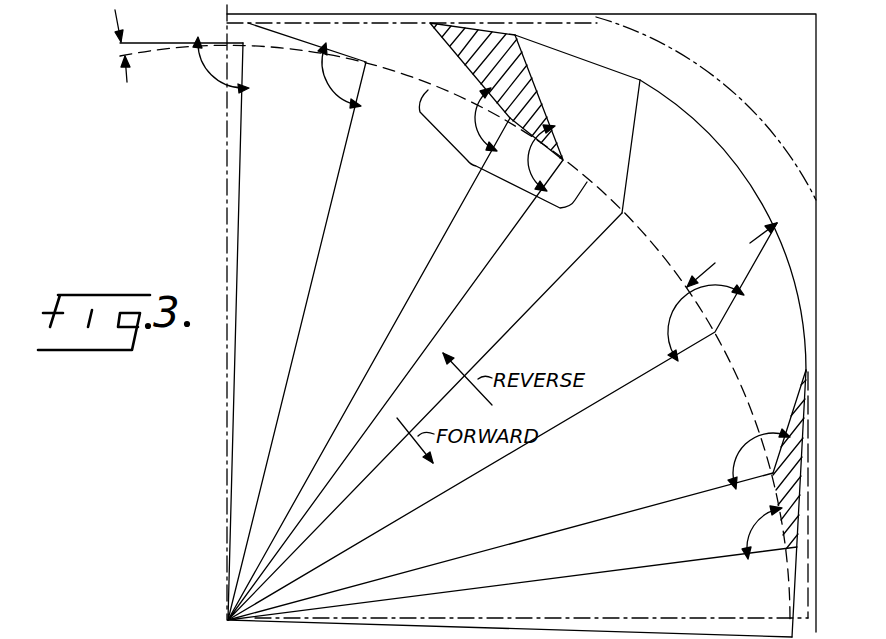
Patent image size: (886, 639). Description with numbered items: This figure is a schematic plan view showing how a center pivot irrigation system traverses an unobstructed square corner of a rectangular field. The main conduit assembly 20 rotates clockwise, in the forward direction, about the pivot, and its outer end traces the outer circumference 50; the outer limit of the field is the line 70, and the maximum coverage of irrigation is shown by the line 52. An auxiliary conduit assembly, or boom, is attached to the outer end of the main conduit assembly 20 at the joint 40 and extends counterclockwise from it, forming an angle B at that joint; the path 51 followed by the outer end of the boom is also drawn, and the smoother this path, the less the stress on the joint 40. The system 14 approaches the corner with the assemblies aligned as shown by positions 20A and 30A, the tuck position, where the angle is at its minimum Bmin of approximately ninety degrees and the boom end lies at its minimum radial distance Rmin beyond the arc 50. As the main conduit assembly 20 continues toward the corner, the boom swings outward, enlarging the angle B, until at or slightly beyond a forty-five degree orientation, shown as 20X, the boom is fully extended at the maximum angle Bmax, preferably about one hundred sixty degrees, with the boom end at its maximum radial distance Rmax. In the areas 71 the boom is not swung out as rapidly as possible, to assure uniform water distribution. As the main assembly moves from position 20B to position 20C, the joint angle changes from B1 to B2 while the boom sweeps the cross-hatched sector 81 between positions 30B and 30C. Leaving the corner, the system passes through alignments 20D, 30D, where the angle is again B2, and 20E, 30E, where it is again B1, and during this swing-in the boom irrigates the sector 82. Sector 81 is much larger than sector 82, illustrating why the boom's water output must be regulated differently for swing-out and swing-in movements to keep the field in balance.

The fan rotor blade assembly 14 is at (487, 306).
The main conduit assembly 20 is at (238, 270).
The main conduit assembly tuck position 20A is at (240, 188).
The main conduit assembly position 20B is at (440, 246).
The main conduit assembly position 20C is at (485, 268).
The main conduit assembly position 20D is at (652, 507).
The main conduit assembly position 20E is at (640, 567).
The main conduit assembly orientation at maximum extension 20X is at (452, 492).
The auxiliary conduit assembly tuck position 30A is at (170, 43).
The auxiliary conduit assembly position 30B is at (438, 34).
The auxiliary conduit assembly position 30C is at (545, 114).
The auxiliary conduit assembly position 30D is at (805, 372).
The auxiliary conduit assembly position 30E is at (802, 478).
The joint 40 is at (619, 216).
The outer circumference of main conduit travel 50 is at (734, 369).
The path of outer end of boom 51 is at (743, 174).
The maximum irrigation coverage line 52 is at (733, 95).
The outer limit of field 70 is at (818, 137).
The areas of restrained boom swing-out 71 is at (503, 149).
The cross-hatched sector 81 is at (527, 85).
The sector 82 is at (806, 444).
The angle between boom and main conduit assembly B is at (322, 85).
The joint angle B1 is at (476, 114).
The joint angle B2 is at (530, 184).
The minimum tuck angle Bmin is at (215, 78).
The maximum extension angle Bmax is at (681, 300).
The minimum radial distance Rmin is at (112, 56).
The maximum radial distance Rmax is at (732, 255).